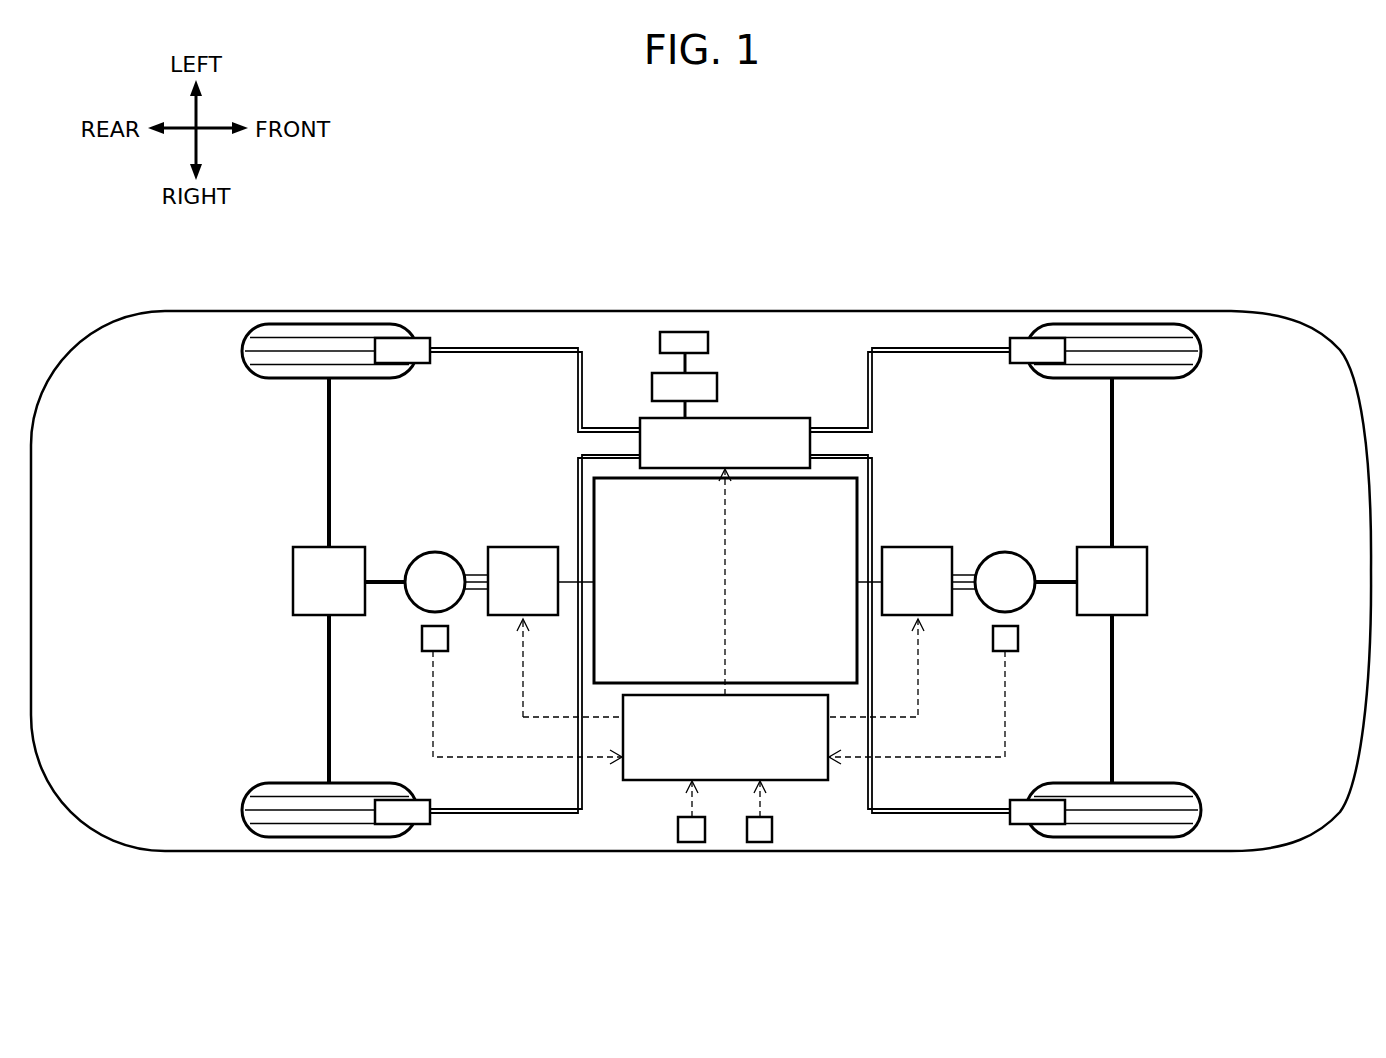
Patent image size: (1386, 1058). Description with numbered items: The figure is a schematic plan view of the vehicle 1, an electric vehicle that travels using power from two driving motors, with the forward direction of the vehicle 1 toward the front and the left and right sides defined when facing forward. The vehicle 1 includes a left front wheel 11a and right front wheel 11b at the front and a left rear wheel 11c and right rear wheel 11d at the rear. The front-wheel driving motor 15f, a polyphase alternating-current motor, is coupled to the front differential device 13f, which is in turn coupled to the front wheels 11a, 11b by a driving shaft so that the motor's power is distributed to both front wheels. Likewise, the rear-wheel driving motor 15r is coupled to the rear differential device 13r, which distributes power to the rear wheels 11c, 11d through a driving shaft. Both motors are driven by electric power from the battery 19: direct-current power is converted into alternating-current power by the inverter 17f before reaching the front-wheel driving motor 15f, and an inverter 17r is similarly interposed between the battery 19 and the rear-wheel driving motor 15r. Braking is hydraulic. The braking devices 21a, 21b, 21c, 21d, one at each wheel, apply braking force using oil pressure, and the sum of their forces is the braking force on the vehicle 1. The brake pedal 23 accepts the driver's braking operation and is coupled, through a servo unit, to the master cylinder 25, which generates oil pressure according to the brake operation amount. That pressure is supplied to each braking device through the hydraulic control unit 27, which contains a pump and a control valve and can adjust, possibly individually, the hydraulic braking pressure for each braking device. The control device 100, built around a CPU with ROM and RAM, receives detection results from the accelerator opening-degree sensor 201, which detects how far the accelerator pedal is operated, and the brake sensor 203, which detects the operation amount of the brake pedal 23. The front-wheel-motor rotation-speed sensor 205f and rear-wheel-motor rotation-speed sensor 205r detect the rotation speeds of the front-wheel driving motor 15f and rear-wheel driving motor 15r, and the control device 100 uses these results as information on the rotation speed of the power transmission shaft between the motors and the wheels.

The vehicle 1 is at (1132, 94).
The front wheel 11a is at (1136, 322).
The front wheel 11b is at (1137, 838).
The rear wheel 11c is at (297, 322).
The rear wheel 11d is at (297, 840).
The braking device 21a is at (1052, 347).
The braking device 21b is at (1040, 817).
The braking device 21c is at (390, 347).
The braking device 21d is at (397, 815).
The rear differential device 13r is at (352, 553).
The front differential device 13f is at (1092, 553).
The rear-wheel driving motor 15r is at (437, 560).
The front-wheel driving motor 15f is at (1002, 558).
The inverter 17r is at (527, 556).
The inverter 17f is at (913, 553).
The battery 19 is at (780, 510).
The brake pedal 23 is at (679, 338).
The master cylinder 25 is at (708, 383).
The hydraulic control unit 27 is at (733, 427).
The control device 100 is at (803, 768).
The accelerator opening-degree sensor 201 is at (692, 843).
The brake sensor 203 is at (760, 843).
The rear-wheel-motor rotation-speed sensor 205r is at (442, 650).
The front-wheel-motor rotation-speed sensor 205f is at (1003, 642).